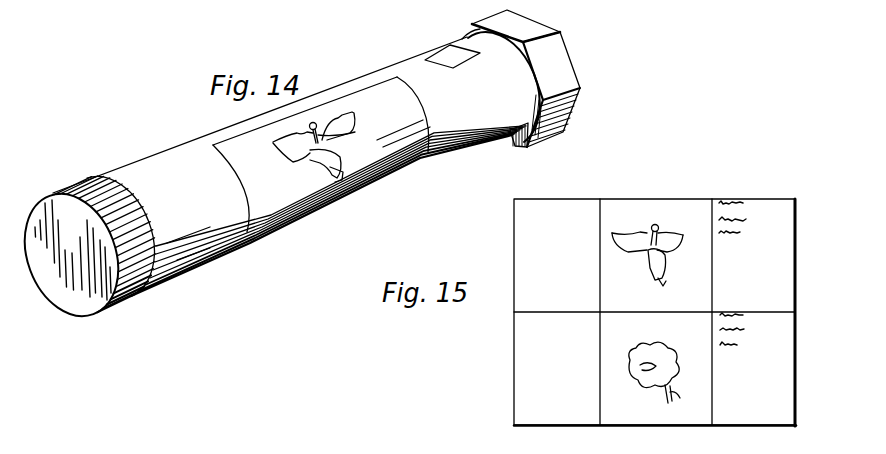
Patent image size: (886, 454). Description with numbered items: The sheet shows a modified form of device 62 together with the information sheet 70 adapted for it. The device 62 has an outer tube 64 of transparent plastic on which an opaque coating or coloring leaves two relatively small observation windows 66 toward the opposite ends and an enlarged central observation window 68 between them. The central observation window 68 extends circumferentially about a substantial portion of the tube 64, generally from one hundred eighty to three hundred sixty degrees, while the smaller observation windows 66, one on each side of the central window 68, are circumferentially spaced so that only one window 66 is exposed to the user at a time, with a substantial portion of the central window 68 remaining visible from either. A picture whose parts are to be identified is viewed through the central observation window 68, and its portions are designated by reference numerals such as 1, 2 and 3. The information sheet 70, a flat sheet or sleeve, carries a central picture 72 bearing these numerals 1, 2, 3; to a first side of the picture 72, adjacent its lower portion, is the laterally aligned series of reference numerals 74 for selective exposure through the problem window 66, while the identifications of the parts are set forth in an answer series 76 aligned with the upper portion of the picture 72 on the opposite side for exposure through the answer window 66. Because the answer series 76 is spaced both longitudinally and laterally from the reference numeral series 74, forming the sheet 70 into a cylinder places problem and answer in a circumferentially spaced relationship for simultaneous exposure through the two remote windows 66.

In FIG. 14, the device 62 is at (192, 137).
In FIG. 14, the outer tube 64 is at (501, 114).
In FIG. 14, the observation windows 66 is at (225, 252).
In FIG. 14, the central observation window 68 is at (280, 208).
In FIG. 15, the information sheet 70 is at (537, 385).
In FIG. 15, the picture 72 is at (663, 206).
In FIG. 15, the series of reference numerals 74 is at (579, 284).
In FIG. 15, the answer series 76 is at (765, 210).
In FIG. 14, the picture element body 1 is at (332, 178).
In FIG. 15, the picture element body 1 is at (652, 276).
In FIG. 14, the picture element wing 2 is at (278, 151).
In FIG. 15, the picture element wing 2 is at (627, 247).
In FIG. 14, the picture element head 3 is at (355, 131).
In FIG. 15, the picture element head 3 is at (661, 229).